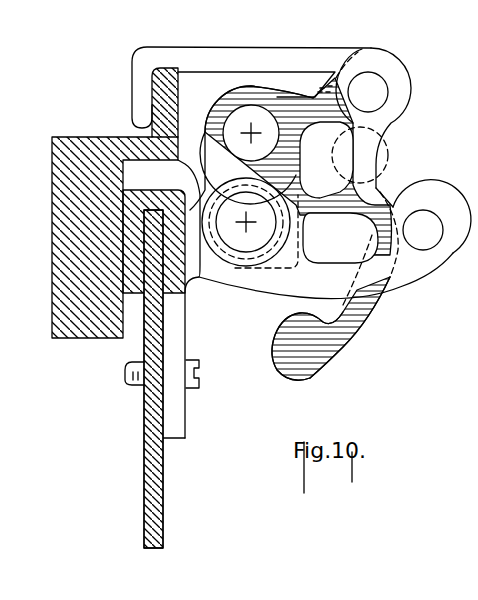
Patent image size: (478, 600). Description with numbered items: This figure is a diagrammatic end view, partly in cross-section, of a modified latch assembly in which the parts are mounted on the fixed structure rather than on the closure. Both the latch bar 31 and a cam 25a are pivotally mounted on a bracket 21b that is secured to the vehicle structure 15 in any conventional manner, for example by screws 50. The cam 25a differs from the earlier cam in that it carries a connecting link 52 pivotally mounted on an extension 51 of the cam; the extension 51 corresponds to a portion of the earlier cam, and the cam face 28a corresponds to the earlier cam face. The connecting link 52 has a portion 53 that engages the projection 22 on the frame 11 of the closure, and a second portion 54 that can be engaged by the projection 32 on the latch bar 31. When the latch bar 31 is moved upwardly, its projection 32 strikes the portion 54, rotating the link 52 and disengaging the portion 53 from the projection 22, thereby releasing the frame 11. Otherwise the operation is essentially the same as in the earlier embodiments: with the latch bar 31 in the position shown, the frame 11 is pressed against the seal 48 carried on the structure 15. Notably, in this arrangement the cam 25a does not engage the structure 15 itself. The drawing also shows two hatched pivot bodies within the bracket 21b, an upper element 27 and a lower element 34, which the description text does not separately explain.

The frame 11 is at (53, 167).
The vehicle structure 15 is at (147, 455).
The bracket 21b is at (186, 328).
The projection 22 is at (182, 82).
The cam 25a is at (382, 189).
The upper cam 27 is at (247, 131).
The cam face 28a is at (380, 317).
The latch bar 31 is at (450, 207).
The projection 32 is at (427, 240).
The lower cam 34 is at (246, 228).
The seal 48 is at (145, 193).
The screws 50 is at (200, 365).
The extension 51 is at (316, 97).
The connecting link 52 is at (232, 60).
The portion 53 is at (137, 98).
The portion 54 is at (385, 143).